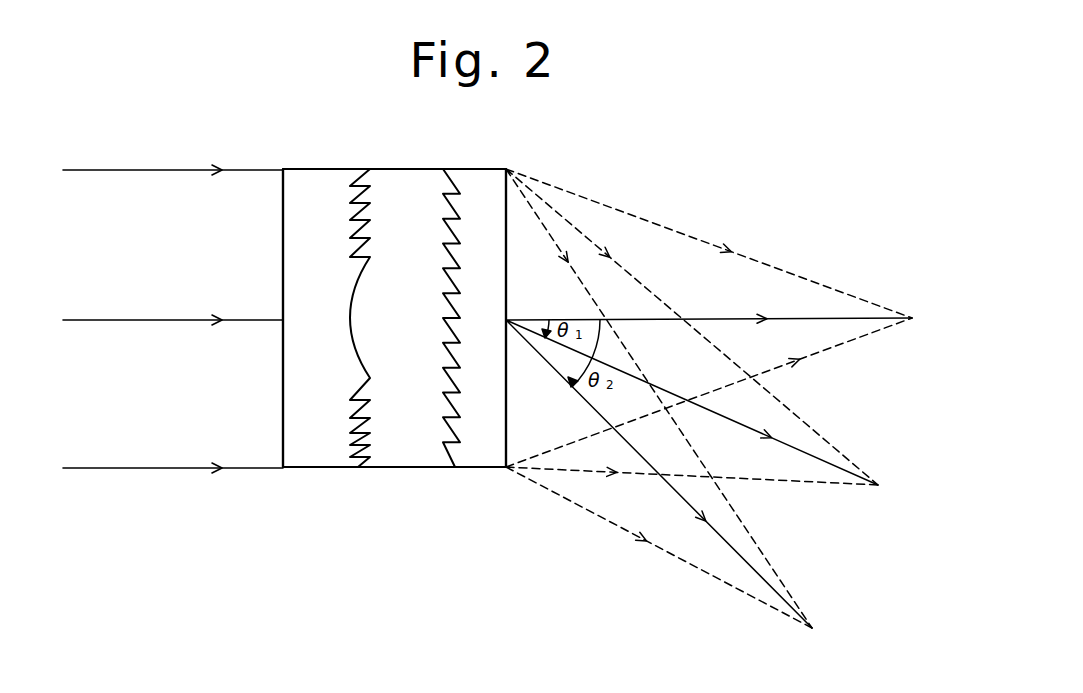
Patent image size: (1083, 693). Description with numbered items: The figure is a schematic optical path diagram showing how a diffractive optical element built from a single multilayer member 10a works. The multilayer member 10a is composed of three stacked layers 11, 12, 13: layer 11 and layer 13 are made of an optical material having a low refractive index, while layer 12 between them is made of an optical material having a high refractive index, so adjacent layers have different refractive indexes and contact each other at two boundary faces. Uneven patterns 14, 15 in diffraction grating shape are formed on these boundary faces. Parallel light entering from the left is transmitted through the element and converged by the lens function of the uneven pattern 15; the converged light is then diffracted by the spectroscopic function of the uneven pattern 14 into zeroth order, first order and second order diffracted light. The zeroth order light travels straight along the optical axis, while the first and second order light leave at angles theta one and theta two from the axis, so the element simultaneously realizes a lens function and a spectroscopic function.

The multilayer member 10a is at (290, 510).
The layer 11 is at (476, 467).
The layer 12 is at (404, 467).
The layer 13 is at (311, 467).
The uneven pattern 14 is at (432, 186).
The uneven pattern 15 is at (332, 185).